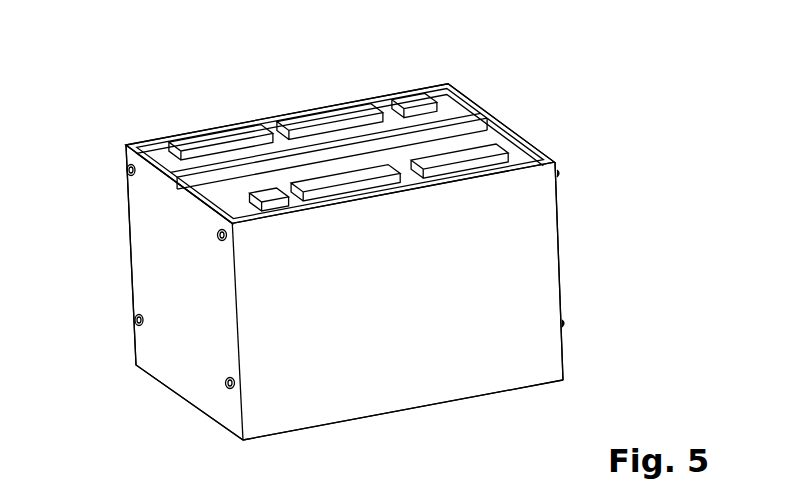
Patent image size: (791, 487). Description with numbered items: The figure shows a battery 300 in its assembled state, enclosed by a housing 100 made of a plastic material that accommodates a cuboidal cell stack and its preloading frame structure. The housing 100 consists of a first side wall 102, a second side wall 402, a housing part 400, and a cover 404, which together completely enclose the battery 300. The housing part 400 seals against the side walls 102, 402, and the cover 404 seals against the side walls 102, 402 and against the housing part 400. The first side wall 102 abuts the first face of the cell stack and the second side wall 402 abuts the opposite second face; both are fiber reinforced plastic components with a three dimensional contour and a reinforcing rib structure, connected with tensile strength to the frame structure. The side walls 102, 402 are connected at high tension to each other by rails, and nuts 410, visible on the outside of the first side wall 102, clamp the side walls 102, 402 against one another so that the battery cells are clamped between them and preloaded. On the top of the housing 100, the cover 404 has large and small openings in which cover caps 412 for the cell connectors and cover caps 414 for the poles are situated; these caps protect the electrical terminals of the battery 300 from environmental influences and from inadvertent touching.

The housing 100 is at (171, 69).
The battery 300 is at (106, 79).
The first side wall 102 is at (180, 378).
The housing part 400 is at (418, 390).
The second side wall 402 is at (560, 256).
The cover 404 is at (465, 100).
The nuts 410 is at (216, 230).
The cover caps for cell connectors 412 is at (222, 138).
The cover caps for poles 414 is at (417, 101).